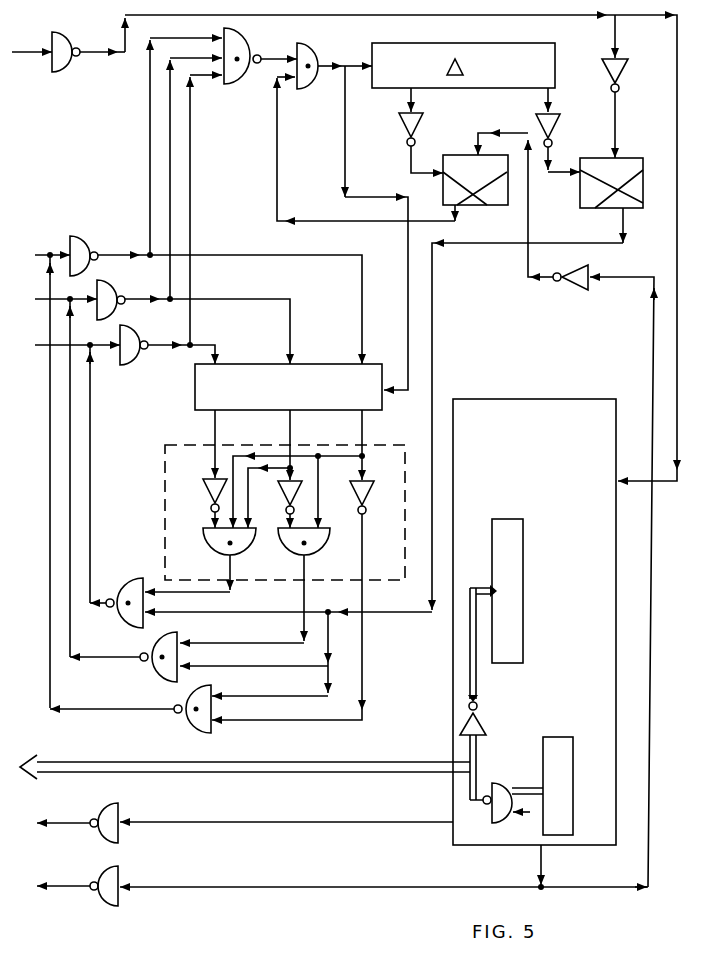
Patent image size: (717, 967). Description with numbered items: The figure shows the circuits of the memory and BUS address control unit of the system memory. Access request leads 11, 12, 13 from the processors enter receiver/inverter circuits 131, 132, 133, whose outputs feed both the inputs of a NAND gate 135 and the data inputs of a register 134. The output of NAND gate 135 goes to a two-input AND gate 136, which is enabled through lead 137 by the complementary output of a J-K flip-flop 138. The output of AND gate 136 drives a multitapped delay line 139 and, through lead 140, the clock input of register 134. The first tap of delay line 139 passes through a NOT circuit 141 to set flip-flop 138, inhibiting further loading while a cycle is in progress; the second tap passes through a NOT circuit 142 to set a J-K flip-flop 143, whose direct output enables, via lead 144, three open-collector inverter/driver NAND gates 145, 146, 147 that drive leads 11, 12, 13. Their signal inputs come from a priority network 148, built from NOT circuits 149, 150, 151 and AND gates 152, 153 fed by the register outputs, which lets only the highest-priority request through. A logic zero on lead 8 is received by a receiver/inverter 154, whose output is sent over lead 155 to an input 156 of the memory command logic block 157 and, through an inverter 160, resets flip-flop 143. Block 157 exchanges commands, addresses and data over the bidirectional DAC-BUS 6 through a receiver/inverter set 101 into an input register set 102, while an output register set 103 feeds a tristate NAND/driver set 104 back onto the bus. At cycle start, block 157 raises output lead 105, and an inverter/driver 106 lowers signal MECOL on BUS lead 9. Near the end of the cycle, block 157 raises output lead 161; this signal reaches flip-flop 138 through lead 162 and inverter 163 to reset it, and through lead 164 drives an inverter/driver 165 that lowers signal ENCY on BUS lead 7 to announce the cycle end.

The DAC-BUS 6 is at (56, 759).
The BUS lead 7 is at (63, 883).
The lead 8 is at (28, 50).
The BUS lead 9 is at (63, 821).
The lead 11 is at (44, 252).
The lead 12 is at (57, 289).
The lead 13 is at (68, 334).
The receiver/inverter set 101 is at (485, 722).
The input register set 102 is at (526, 529).
The output register set 103 is at (566, 737).
The tristate NAND/driver set 104 is at (505, 782).
The output lead 105 is at (331, 822).
The inverter/driver 106 is at (122, 809).
The receiver/inverter circuit 131 is at (86, 243).
The receiver/inverter circuit 132 is at (114, 292).
The receiver/inverter circuit 133 is at (139, 335).
The register 134 is at (195, 390).
The NAND gate 135 is at (240, 85).
The AND gate 136 is at (307, 90).
The lead 137 is at (277, 193).
The J-K flip-flop 138 is at (455, 155).
The multitapped delay line 139 is at (490, 47).
The lead 140 is at (343, 163).
The inverter NOT circuit 141 is at (401, 122).
The NOT circuit 142 is at (560, 132).
The J-K flip-flop 143 is at (628, 152).
The lead 144 is at (437, 304).
The inverter/driver NAND gate 145 is at (214, 733).
The inverter/driver NAND gate 146 is at (150, 670).
The inverter/driver NAND gate 147 is at (128, 569).
The priority network 148 is at (163, 481).
The NOT circuit 149 is at (207, 483).
The NOT circuit 150 is at (284, 482).
The NOT circuit 151 is at (368, 491).
The AND gate 152 is at (203, 542).
The AND gate 153 is at (278, 543).
The receiver/inverter 154 is at (72, 38).
The lead 155 is at (645, 20).
The input 156 is at (621, 488).
The memory command logic block 157 is at (533, 398).
The inverter 160 is at (626, 78).
The output lead 161 is at (539, 863).
The lead 162 is at (652, 331).
The inverter 163 is at (570, 291).
The lead 164 is at (266, 887).
The inverter/driver 165 is at (122, 872).